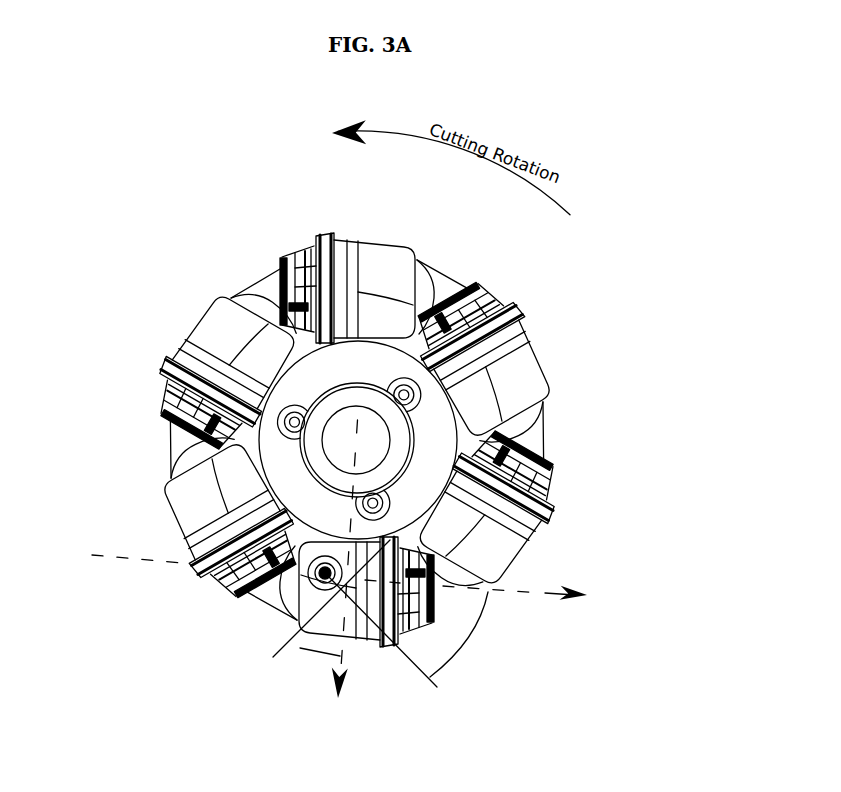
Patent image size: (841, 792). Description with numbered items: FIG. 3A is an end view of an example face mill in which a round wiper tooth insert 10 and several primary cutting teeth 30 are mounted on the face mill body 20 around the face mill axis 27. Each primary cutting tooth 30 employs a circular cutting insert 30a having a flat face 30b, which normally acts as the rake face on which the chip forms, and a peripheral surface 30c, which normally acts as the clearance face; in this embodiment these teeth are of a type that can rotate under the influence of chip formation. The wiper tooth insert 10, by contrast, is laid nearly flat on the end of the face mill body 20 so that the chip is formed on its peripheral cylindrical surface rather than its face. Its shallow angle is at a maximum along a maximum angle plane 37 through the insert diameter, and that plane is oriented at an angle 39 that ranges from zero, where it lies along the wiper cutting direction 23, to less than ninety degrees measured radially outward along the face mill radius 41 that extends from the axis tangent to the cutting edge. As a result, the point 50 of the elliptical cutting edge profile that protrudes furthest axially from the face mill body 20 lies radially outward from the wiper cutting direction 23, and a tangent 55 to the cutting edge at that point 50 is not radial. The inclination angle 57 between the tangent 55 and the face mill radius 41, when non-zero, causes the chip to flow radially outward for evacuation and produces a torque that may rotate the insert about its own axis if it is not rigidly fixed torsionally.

The wiper tooth insert 10 is at (300, 625).
The face mill body 20 is at (122, 453).
The wiper cutting direction 23 is at (542, 592).
The face mill axis 27 is at (340, 442).
The primary cutting teeth 30 is at (162, 380).
The circular cutting insert 30a is at (555, 498).
The flat face 30b is at (560, 477).
The peripheral surface 30c is at (553, 520).
The maximum angle plane 37 is at (437, 686).
The angle of the maximum angle plane 39 is at (470, 643).
The face mill radius 41 is at (343, 672).
The point of furthest axial protrusion 50 is at (350, 665).
The tangent 55 is at (273, 652).
The inclination angle 57 is at (300, 648).